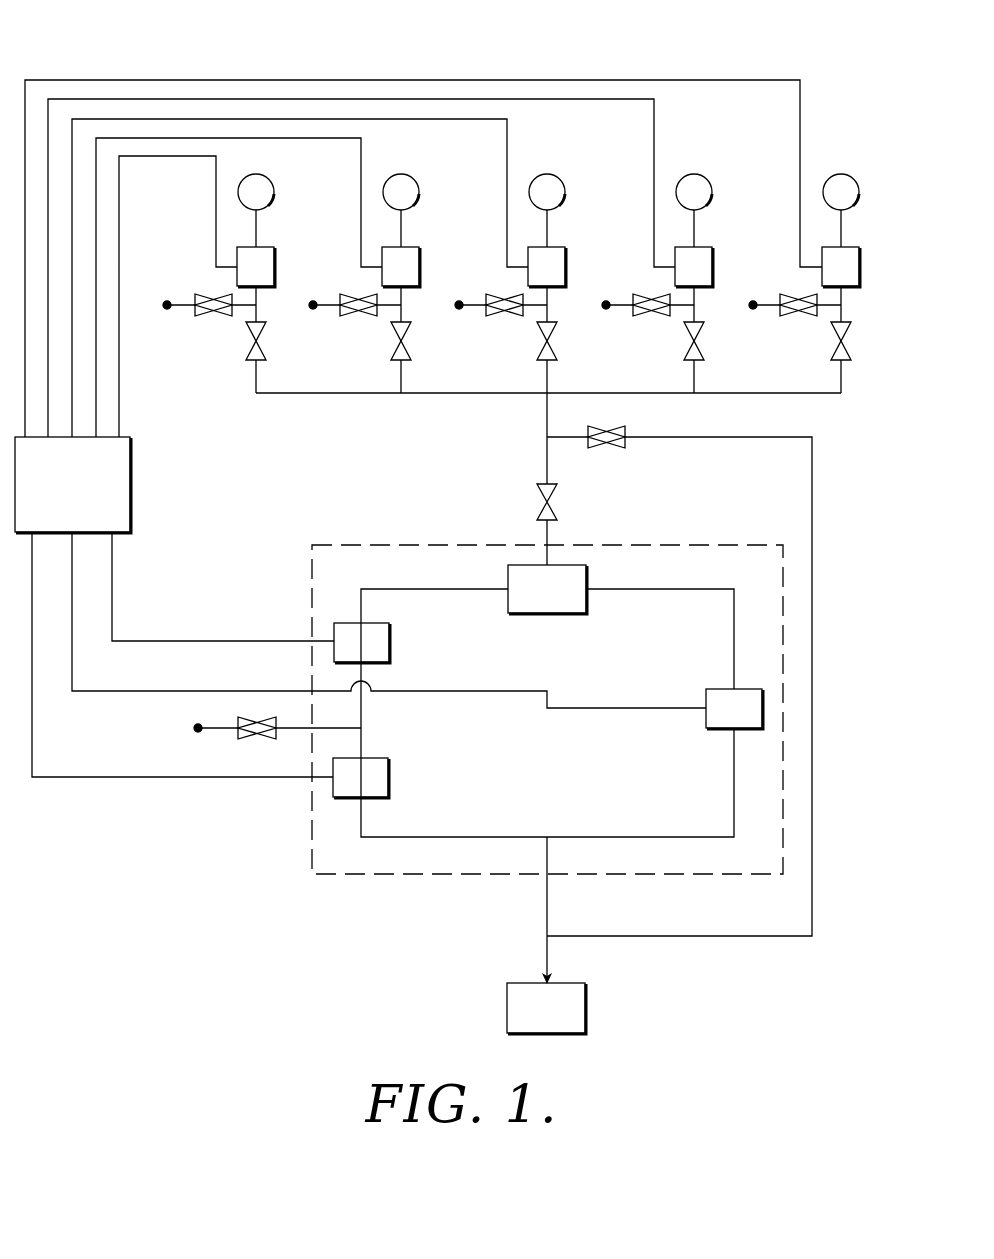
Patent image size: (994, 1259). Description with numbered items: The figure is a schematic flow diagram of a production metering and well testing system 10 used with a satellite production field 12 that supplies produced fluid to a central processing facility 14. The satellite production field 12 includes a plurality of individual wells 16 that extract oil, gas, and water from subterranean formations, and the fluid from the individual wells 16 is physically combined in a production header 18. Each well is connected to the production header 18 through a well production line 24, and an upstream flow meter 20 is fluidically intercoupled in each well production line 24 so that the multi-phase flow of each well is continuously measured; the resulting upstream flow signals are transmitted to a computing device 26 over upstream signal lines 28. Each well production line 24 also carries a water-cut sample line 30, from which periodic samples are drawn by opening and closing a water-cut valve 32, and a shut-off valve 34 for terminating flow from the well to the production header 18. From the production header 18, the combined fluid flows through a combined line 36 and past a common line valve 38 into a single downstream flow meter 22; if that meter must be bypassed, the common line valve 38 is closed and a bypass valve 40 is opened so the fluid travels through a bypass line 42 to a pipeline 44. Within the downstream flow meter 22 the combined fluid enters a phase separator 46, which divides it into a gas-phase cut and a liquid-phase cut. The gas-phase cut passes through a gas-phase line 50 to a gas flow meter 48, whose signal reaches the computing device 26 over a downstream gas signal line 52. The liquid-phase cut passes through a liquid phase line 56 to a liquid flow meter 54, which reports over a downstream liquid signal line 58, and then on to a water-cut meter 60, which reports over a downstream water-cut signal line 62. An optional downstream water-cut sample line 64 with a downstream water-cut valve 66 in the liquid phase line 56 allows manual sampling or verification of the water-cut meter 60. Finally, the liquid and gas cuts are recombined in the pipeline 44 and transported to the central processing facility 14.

The production metering and well testing system 10 is at (845, 438).
The satellite production field 12 is at (863, 170).
The central processing facility 14 is at (590, 1008).
The individual well 16 is at (262, 187).
The production header 18 is at (343, 395).
The upstream flow meter 20 is at (265, 274).
The downstream flow meter 22 is at (380, 545).
The well production line 24 is at (258, 233).
The computing device 26 is at (73, 485).
The upstream signal line 28 is at (133, 156).
The water-cut sample line 30 is at (182, 302).
The water-cut valve 32 is at (218, 308).
The shut-off valve 34 is at (246, 353).
The combined line 36 is at (545, 410).
The common line valve 38 is at (540, 514).
The bypass valve 40 is at (616, 442).
The bypass line 42 is at (812, 696).
The pipeline 44 is at (542, 900).
The phase separator 46 is at (545, 605).
The gas flow meter 48 is at (725, 695).
The gas-phase line 50 is at (663, 589).
The downstream gas signal line 52 is at (102, 693).
The liquid flow meter 54 is at (382, 638).
The liquid phase line 56 is at (448, 589).
The downstream liquid signal line 58 is at (152, 641).
The water-cut meter 60 is at (382, 782).
The downstream water-cut signal line 62 is at (110, 777).
The downstream water-cut sample line 64 is at (212, 729).
The downstream water-cut valve 66 is at (268, 735).